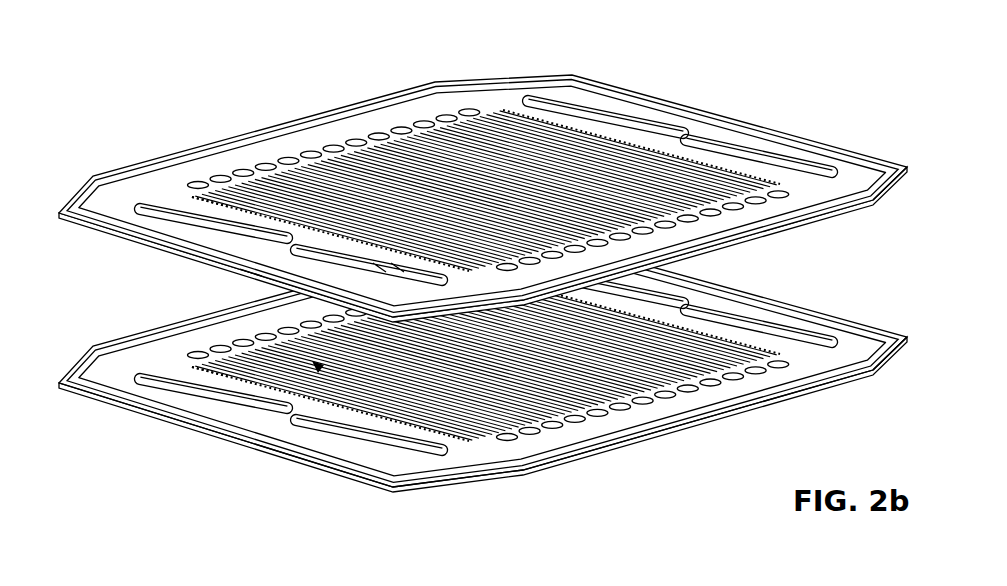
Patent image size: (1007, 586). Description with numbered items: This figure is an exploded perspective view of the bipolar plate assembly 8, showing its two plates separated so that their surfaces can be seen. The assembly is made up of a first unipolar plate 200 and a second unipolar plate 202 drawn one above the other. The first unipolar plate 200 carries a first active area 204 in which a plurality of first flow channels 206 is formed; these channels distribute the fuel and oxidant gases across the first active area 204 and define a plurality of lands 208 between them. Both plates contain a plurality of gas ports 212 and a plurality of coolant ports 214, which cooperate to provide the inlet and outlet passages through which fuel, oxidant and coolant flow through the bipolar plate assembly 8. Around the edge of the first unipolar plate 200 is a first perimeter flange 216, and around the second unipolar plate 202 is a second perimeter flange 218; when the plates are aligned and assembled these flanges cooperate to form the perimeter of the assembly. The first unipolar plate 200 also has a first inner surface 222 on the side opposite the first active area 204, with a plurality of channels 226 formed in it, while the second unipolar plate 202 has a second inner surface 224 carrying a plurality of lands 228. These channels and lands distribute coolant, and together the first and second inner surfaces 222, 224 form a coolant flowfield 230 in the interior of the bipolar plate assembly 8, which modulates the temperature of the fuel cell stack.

The bipolar plate assembly 8 is at (725, 88).
The first unipolar plate 200 is at (624, 86).
The second unipolar plate 202 is at (449, 481).
The first active area 204 is at (500, 160).
The first flow channels 206 is at (226, 201).
The lands 208 is at (230, 197).
The gas ports 212 is at (548, 122).
The coolant ports 214 is at (350, 143).
The first perimeter flange 216 is at (905, 164).
The second perimeter flange 218 is at (898, 358).
The first inner surface 222 is at (322, 207).
The second inner surface 224 is at (358, 390).
The channels 226 is at (242, 350).
The lands 228 is at (227, 371).
The coolant flowfield 230 is at (287, 368).